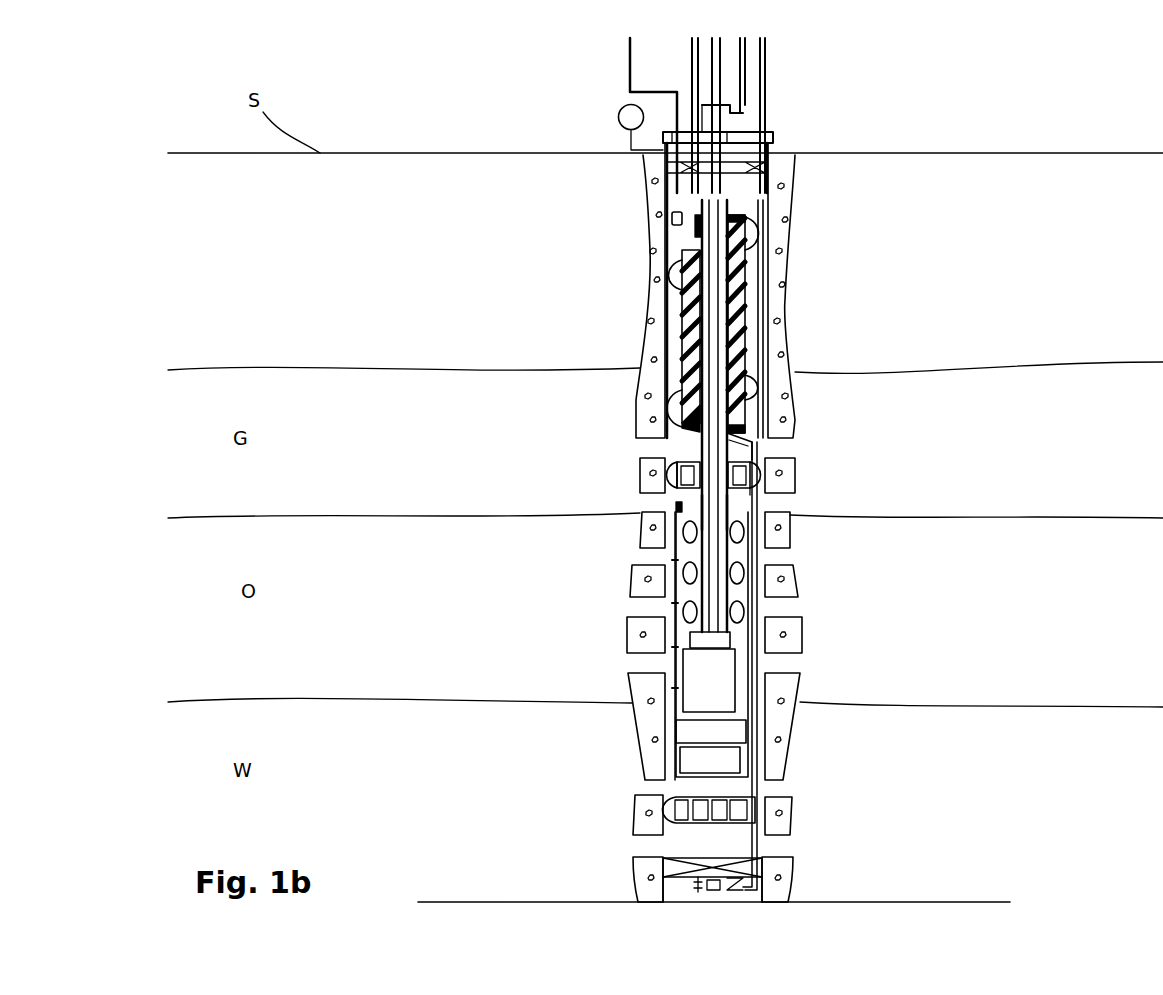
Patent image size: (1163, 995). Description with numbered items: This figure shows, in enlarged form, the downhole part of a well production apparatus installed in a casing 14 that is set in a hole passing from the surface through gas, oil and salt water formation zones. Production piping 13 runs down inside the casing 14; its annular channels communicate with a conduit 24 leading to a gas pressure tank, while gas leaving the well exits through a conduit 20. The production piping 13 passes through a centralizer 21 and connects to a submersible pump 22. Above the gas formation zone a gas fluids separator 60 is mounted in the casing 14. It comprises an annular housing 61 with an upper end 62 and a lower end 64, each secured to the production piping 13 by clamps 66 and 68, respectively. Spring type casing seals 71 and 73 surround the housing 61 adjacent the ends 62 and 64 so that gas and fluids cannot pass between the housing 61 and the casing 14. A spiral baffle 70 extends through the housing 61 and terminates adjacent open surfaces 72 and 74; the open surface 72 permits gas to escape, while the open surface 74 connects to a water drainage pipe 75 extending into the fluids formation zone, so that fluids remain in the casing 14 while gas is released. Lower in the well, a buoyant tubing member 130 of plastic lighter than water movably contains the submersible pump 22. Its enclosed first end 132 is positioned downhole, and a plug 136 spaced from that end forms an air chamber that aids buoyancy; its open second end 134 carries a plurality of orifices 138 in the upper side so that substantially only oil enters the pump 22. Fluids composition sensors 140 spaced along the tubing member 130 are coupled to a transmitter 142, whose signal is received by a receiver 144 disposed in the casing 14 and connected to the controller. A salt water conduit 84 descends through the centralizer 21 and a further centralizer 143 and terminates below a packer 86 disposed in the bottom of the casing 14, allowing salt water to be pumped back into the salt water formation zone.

The production piping 13 is at (745, 202).
The casing 14 is at (660, 188).
The conduit 20 is at (692, 58).
The centralizer 21 is at (752, 447).
The submersible pump 22 is at (727, 678).
The conduit 24 is at (743, 67).
The gas fluids separator 60 is at (745, 282).
The annular housing 61 is at (682, 332).
The end 62 is at (750, 218).
The end 64 is at (690, 430).
The clamp 66 is at (695, 232).
The clamp 68 is at (762, 462).
The spiral baffle 70 is at (745, 322).
The spring type casing seal 71 is at (686, 283).
The open surface 72 is at (688, 255).
The spring type casing seal 73 is at (670, 405).
The open surface 74 is at (748, 400).
The water drainage pipe 75 is at (762, 490).
The conduit 84 is at (748, 560).
The packer 86 is at (663, 866).
The buoyant tubing member 130 is at (745, 712).
The first end 132 is at (665, 785).
The second end 134 is at (735, 512).
The plug 136 is at (740, 733).
The orifices 138 is at (745, 602).
The fluids composition sensors 140 is at (684, 575).
The transmitter 142 is at (678, 505).
The centralizer 143 is at (757, 790).
The receiver 144 is at (672, 218).